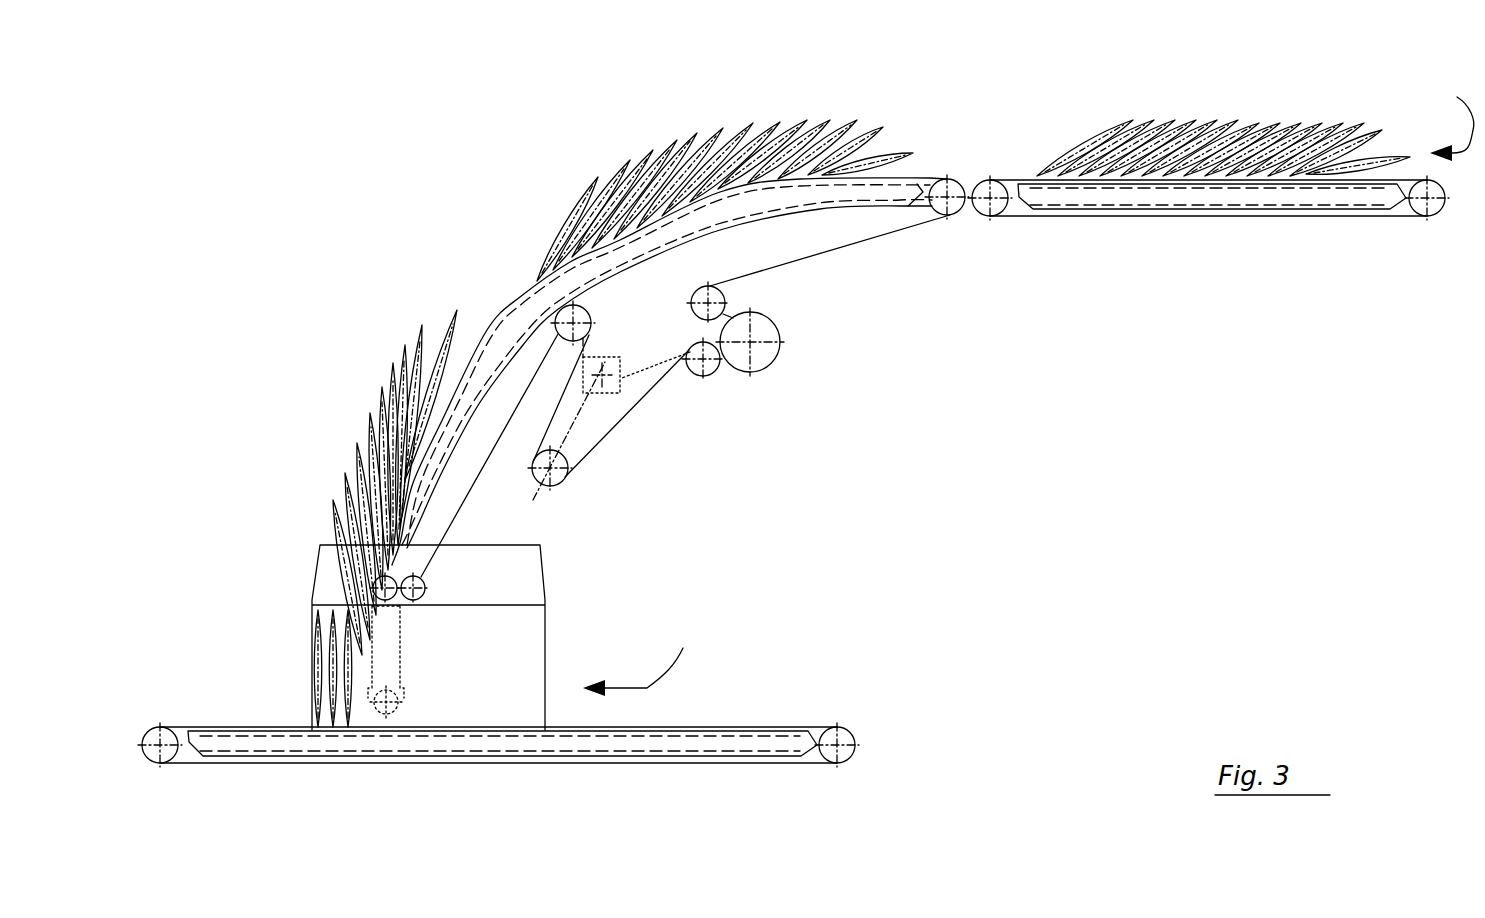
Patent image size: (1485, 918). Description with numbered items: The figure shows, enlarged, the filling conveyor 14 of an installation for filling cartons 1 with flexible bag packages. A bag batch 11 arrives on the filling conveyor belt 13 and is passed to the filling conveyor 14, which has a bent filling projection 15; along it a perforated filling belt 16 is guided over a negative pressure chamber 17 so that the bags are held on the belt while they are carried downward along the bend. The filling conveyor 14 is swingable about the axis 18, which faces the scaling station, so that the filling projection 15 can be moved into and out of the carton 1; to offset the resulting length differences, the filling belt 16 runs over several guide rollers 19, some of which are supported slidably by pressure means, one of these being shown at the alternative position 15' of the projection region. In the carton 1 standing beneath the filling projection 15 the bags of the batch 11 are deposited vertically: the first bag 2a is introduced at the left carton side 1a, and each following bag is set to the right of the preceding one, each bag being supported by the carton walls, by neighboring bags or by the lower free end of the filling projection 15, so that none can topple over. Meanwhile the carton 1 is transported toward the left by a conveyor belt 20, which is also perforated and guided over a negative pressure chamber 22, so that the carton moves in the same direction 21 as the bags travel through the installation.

The carton 1 is at (533, 662).
The carton side 1a is at (312, 680).
The first bag 2a is at (313, 648).
The bag batch 11 is at (744, 92).
The filling conveyor belt 13 is at (1010, 177).
The filling conveyor 14 is at (340, 217).
The filling projection 15 is at (424, 645).
The pusher mechanism 15' is at (548, 437).
The perforated filling belt 16 is at (488, 330).
The negative pressure chamber 17 is at (600, 253).
The axis 18 is at (953, 203).
The guide rollers 19 is at (567, 477).
The conveyor belt 20 is at (817, 728).
The direction 21 is at (1028, 379).
The negative pressure chamber 22 is at (620, 747).